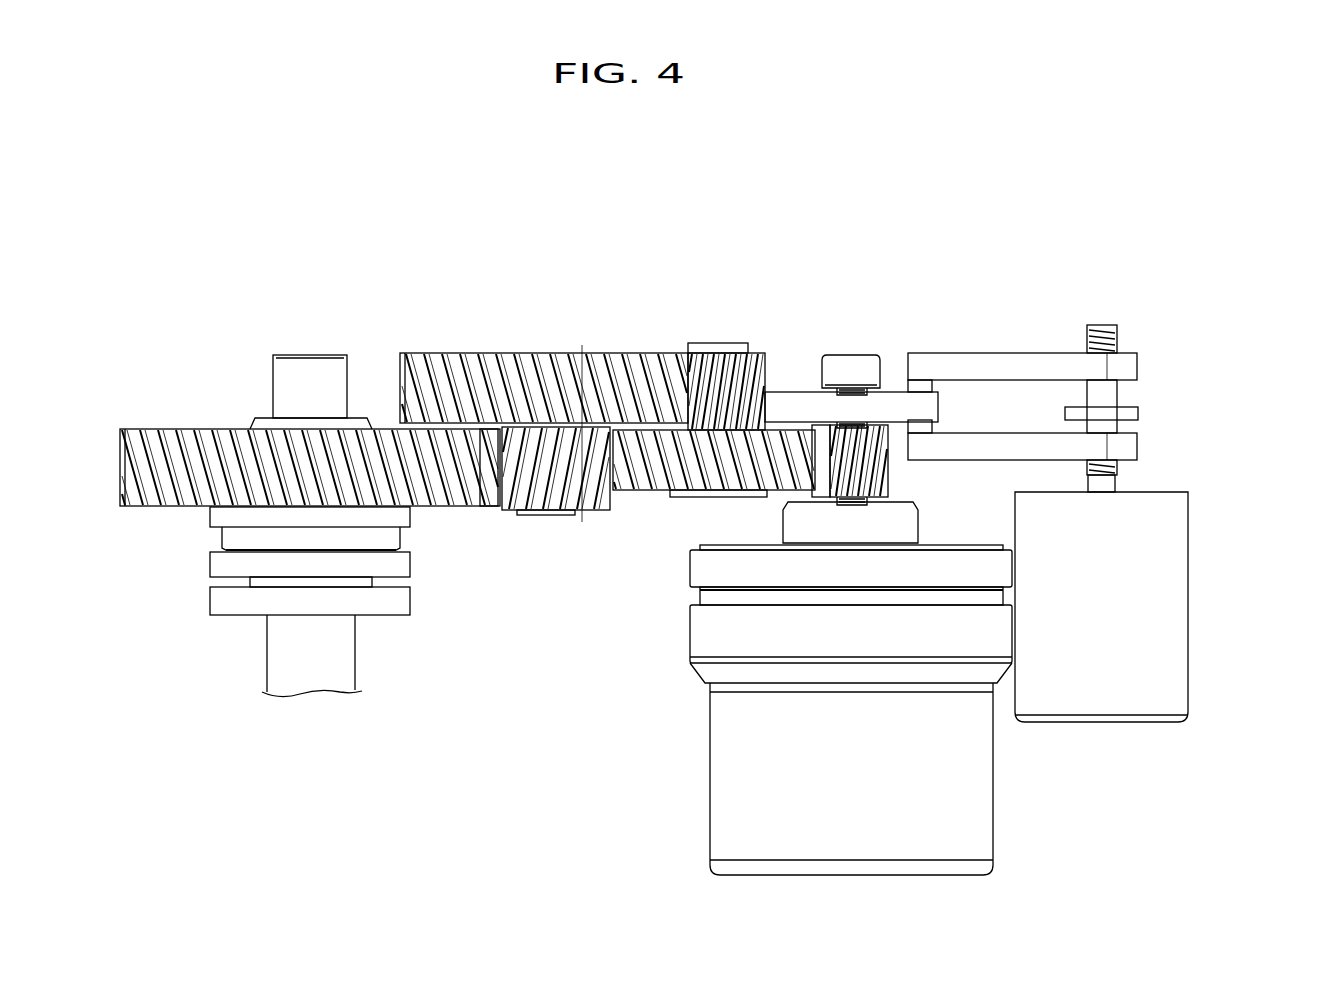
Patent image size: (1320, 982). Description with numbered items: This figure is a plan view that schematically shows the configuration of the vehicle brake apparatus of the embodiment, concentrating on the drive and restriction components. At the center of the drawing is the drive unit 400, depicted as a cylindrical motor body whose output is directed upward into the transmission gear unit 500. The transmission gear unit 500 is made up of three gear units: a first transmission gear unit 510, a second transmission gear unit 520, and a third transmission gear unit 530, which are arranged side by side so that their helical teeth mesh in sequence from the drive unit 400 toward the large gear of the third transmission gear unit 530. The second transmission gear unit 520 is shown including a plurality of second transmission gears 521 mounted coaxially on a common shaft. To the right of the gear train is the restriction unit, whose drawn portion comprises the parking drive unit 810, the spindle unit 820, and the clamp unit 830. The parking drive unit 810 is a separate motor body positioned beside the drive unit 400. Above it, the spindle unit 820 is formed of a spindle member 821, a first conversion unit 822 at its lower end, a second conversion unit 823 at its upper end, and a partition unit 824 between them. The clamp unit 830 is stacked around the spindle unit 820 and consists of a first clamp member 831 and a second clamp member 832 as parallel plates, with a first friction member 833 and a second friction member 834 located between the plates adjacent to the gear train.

The drive unit 400 is at (973, 780).
The transmission gear unit 500 is at (748, 242).
The first transmission gear unit 510 is at (828, 438).
The second transmission gear unit 520 is at (637, 272).
The second transmission gear 521 is at (555, 373).
The third transmission gear unit 530 is at (400, 462).
The parking drive unit 810 is at (1163, 546).
The spindle unit 820 is at (1203, 262).
The spindle member 821 is at (1108, 400).
The first conversion unit 822 is at (1117, 466).
The second conversion unit 823 is at (1117, 338).
The partition unit 824 is at (1135, 415).
The clamp unit 830 is at (1072, 262).
The first clamp member 831 is at (987, 448).
The second clamp member 832 is at (1037, 367).
The first friction member 833 is at (912, 427).
The second friction member 834 is at (920, 383).